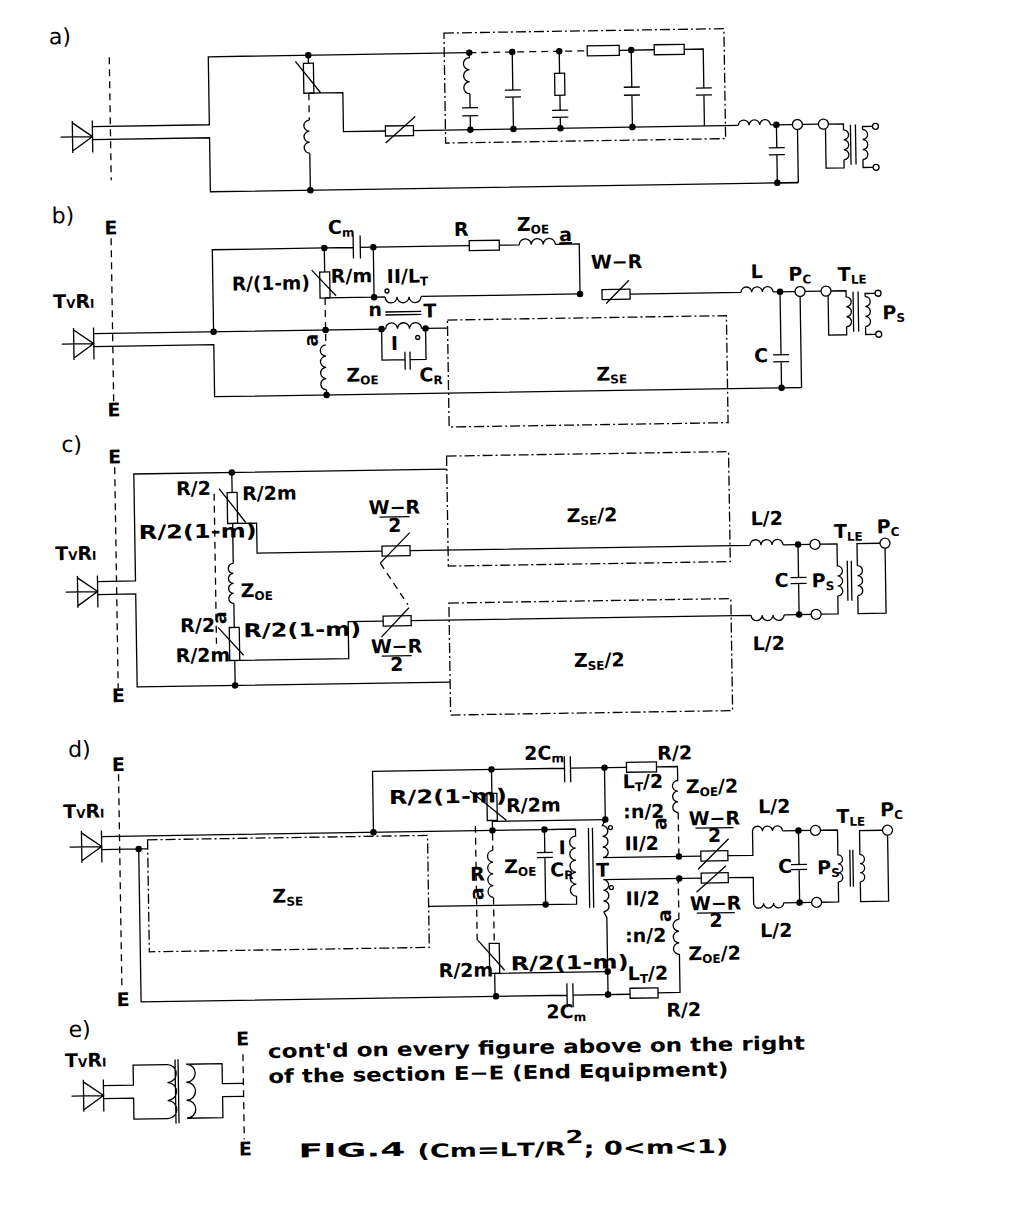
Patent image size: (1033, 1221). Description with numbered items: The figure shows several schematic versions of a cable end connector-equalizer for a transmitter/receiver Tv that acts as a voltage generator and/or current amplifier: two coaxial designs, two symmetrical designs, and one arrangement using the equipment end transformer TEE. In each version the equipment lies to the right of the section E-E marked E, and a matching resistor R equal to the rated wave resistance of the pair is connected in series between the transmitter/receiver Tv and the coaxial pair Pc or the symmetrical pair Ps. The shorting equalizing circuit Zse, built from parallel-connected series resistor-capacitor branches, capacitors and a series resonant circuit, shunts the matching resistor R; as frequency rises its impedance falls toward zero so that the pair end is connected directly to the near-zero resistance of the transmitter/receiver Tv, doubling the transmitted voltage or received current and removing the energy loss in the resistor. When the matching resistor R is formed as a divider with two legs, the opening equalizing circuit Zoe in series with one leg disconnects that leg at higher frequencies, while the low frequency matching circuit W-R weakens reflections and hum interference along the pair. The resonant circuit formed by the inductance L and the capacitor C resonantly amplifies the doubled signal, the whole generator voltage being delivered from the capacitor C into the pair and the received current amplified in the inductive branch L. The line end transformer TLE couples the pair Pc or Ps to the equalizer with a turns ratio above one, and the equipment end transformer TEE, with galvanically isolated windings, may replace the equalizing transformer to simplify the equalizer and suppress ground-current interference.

The section E- E is at (110, 115).
The transmitter and/or receiver as a voltage generator and/or current amplifier Tv is at (73, 120).
The matching resistor R is at (299, 94).
The opening equalizing circuit Zoe is at (321, 141).
The low frequency matching circuit W-R is at (400, 115).
The shorting equalizing circuit Zse is at (575, 85).
The inductive branch of resonant circuit LC L is at (765, 107).
The capacitor of resonant circuit LC C is at (767, 154).
The coaxial physical pair Pc is at (793, 135).
The line end transformer TLE is at (835, 131).
The symmetrical physical pair Ps is at (882, 147).
The equipment end transformer TEE is at (173, 1079).